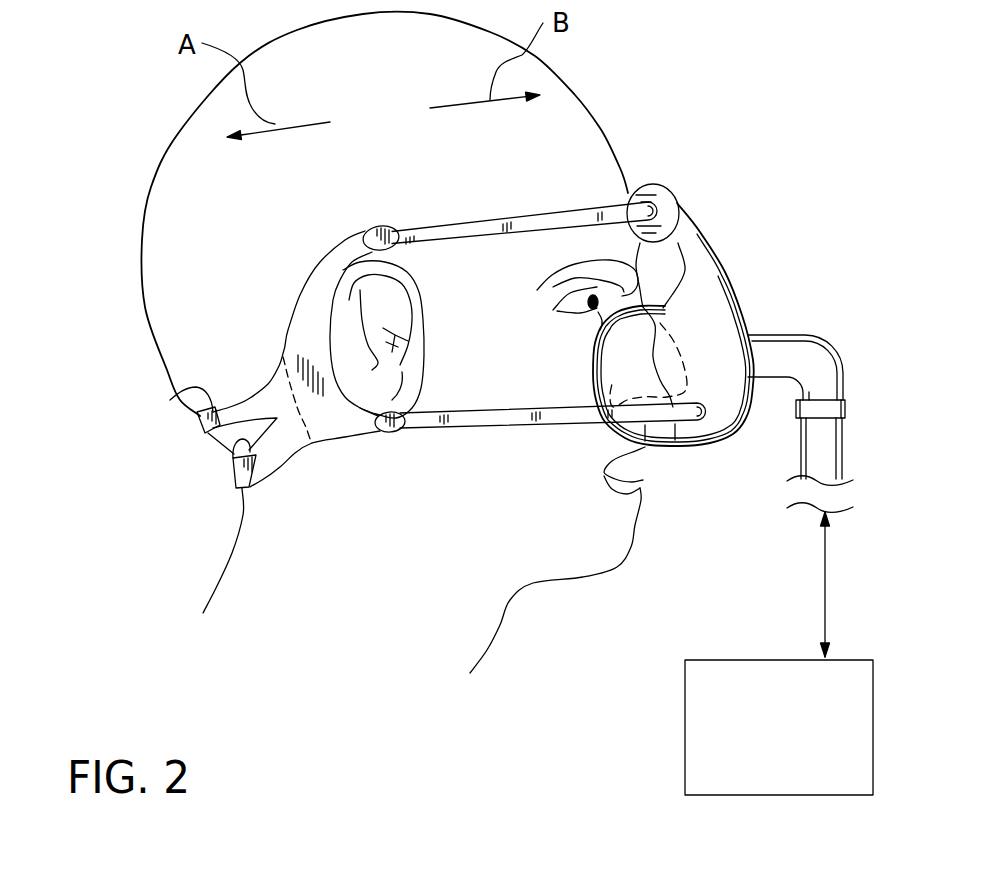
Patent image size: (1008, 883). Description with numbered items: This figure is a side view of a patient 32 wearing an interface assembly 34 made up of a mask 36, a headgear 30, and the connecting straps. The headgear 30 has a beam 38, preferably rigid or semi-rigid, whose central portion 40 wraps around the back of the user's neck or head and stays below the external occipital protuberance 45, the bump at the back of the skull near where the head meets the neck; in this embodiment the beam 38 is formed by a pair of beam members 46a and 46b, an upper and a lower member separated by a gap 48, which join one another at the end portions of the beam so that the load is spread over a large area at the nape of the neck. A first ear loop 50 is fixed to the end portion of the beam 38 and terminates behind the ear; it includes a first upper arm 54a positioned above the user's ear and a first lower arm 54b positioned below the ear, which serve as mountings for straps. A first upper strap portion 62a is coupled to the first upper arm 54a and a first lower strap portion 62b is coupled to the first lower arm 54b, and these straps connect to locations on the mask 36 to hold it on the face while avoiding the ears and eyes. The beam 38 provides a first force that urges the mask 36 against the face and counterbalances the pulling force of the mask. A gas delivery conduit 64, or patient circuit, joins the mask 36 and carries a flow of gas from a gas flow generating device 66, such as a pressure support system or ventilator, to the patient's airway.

The headgear 30 is at (192, 325).
The patient 32 is at (167, 192).
The interface assembly 34 is at (751, 124).
The mask 36 is at (727, 304).
The beam 38 is at (311, 442).
The central portion 40 is at (170, 400).
The external occipital protuberance 45 is at (147, 369).
The beam member 46a is at (203, 420).
The beam member 46b is at (237, 473).
The gap 48 is at (233, 447).
The first ear loop 50 is at (307, 300).
The first upper arm 54a is at (362, 240).
The first lower arm 54b is at (385, 433).
The first upper strap portion 62a is at (547, 214).
The first lower strap portion 62b is at (497, 430).
The gas delivery conduit 64 is at (800, 335).
The gas flow generating device 66 is at (794, 744).